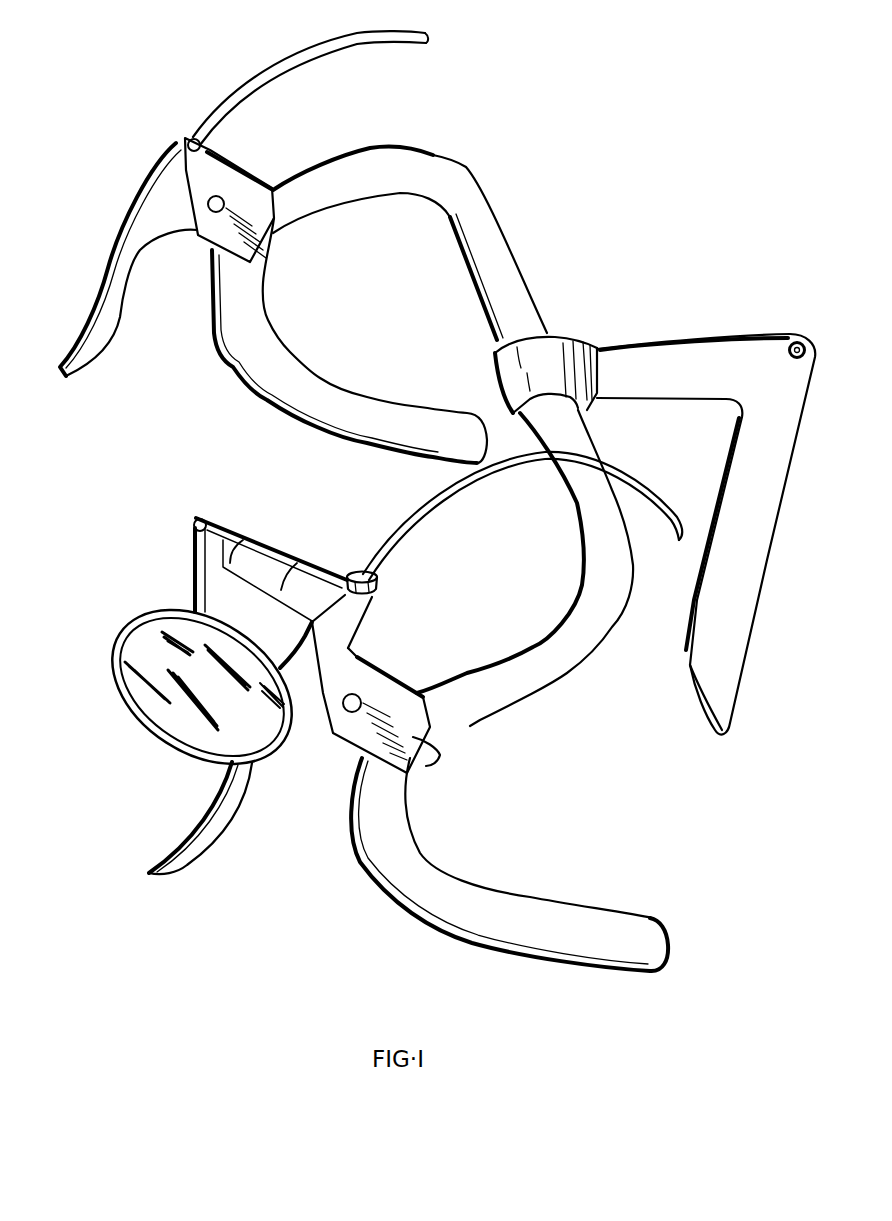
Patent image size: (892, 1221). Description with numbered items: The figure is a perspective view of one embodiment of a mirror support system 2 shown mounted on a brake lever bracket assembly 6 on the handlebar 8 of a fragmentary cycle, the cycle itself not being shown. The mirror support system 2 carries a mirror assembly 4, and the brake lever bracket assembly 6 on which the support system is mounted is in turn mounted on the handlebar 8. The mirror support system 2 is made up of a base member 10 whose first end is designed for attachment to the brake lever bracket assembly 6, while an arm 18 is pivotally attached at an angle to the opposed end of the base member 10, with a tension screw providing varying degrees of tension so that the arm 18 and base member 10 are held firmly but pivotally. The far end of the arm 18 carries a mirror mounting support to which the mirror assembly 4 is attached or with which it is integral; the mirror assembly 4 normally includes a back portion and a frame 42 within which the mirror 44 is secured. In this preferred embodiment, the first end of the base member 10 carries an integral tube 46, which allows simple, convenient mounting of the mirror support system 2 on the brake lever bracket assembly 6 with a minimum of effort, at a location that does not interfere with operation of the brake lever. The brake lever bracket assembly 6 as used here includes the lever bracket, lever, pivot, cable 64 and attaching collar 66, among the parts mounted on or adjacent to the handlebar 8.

The mirror support system 2 is at (283, 548).
The mirror assembly 4 is at (114, 699).
The brake lever bracket assembly 6 is at (380, 660).
The handlebar 8 is at (540, 677).
The base member 10 is at (312, 572).
The arm 18 is at (197, 564).
The frame 42 is at (124, 644).
The mirror 44 is at (192, 738).
The tube 46 is at (362, 609).
The cable 64 is at (424, 514).
The attaching collar 66 is at (434, 740).